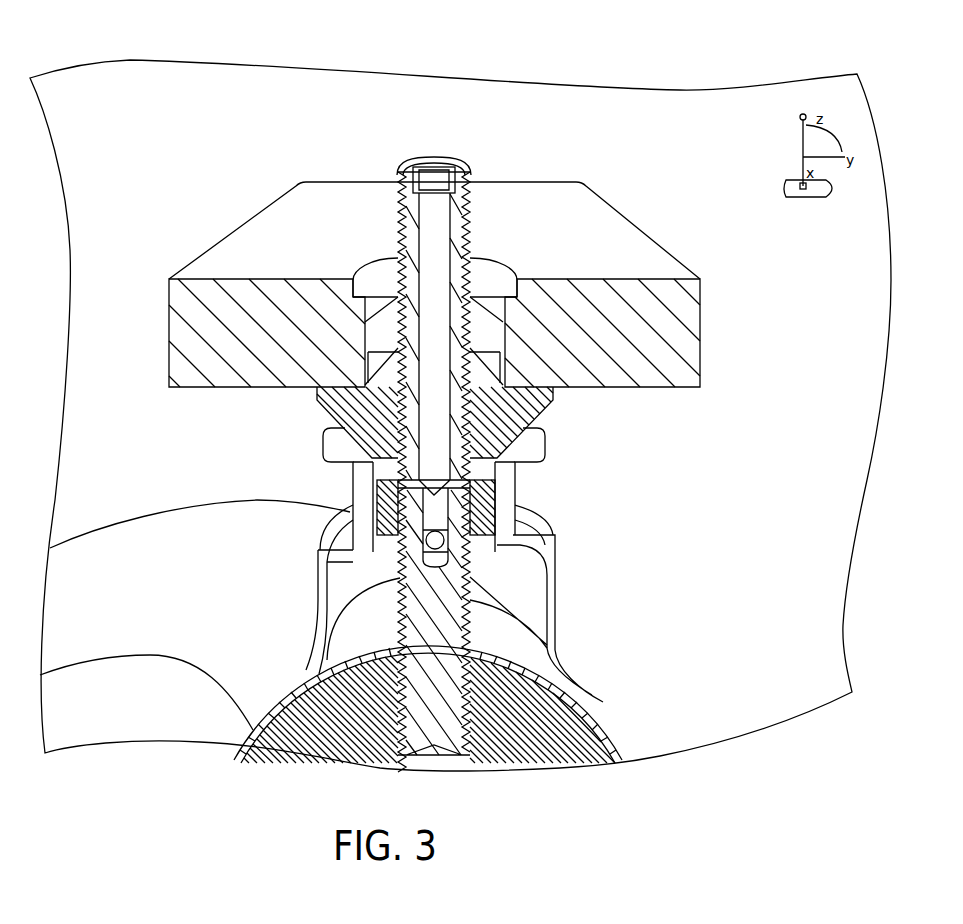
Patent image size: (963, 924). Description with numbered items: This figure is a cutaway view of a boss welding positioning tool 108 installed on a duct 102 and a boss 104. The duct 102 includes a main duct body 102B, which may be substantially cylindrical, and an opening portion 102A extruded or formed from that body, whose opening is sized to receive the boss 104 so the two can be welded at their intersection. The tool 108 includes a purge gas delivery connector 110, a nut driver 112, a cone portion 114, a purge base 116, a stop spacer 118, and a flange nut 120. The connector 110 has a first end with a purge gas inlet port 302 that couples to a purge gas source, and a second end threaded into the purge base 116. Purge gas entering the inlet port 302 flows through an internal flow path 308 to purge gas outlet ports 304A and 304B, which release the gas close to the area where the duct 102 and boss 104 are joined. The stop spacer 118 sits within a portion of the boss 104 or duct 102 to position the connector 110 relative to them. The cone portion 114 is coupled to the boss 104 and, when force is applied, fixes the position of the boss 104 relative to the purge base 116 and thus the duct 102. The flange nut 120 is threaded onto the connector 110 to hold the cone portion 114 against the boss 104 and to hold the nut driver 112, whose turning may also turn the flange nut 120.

The boss welding positioning tool 108 is at (483, 106).
The purge gas delivery connector 110 is at (420, 163).
The purge gas inlet port 302 is at (462, 172).
The nut driver 112 is at (640, 226).
The flange nut 120 is at (385, 282).
The cone portion 114 is at (325, 393).
The flow path 308 is at (433, 424).
The stop spacer 118 is at (372, 498).
The purge gas outlet port 304A is at (482, 503).
The boss 104 is at (552, 537).
The opening portion 102A is at (318, 605).
The purge gas outlet port 304B is at (473, 558).
The purge base 116 is at (604, 700).
The main duct body 102B is at (78, 697).
The duct 102 is at (147, 727).